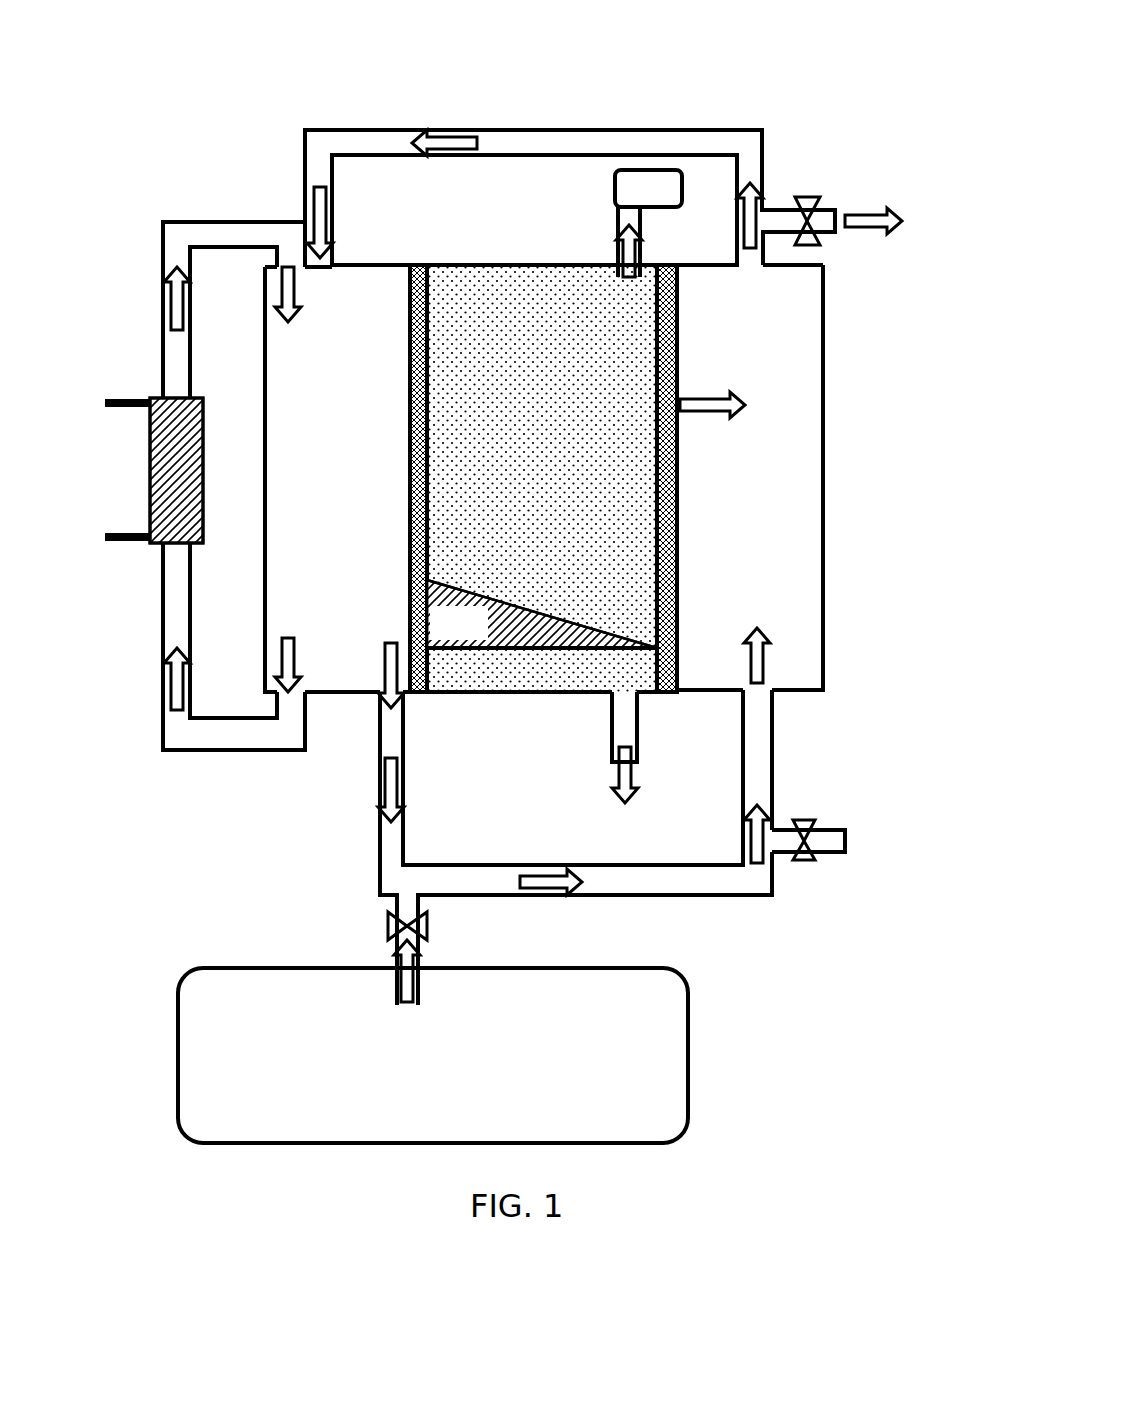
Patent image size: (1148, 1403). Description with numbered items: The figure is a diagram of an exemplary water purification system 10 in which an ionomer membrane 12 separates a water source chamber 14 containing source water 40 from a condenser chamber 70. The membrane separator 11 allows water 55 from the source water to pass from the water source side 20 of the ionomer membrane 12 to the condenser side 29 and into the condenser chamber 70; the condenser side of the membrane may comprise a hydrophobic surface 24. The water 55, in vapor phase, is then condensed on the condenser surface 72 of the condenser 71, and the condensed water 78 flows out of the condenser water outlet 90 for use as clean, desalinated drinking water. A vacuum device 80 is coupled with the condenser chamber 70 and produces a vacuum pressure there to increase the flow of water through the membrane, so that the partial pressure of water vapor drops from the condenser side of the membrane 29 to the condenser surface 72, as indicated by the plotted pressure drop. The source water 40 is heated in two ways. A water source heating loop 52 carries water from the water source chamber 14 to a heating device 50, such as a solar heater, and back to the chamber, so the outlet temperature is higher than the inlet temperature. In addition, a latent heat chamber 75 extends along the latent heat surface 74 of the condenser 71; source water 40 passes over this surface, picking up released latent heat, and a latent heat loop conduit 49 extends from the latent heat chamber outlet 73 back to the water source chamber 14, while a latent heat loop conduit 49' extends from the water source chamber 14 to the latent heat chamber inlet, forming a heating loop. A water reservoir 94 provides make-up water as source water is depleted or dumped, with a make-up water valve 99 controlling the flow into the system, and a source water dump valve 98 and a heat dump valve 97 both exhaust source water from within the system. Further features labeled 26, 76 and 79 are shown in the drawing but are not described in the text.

The water purification system 10 is at (287, 108).
The membrane separator 11 is at (488, 268).
The ionomer membrane 12 is at (414, 266).
The water source chamber 14 is at (352, 430).
The water source side 20 is at (408, 553).
The hydrophobic surface 24 is at (428, 292).
The membrane surface 26 is at (410, 310).
The condenser side 29 is at (430, 333).
The source water 40 is at (352, 488).
The latent heat loop conduit 49 is at (603, 211).
The latent heat loop conduit 49' is at (618, 794).
The heating device 50 is at (150, 398).
The water source heating loop 52 is at (176, 224).
The water 55 is at (502, 468).
The condenser chamber 70 is at (549, 423).
The condenser 71 is at (680, 568).
The condenser surface 72 is at (655, 490).
The latent heat chamber outlet 73 is at (742, 268).
The latent heat surface 74 is at (680, 489).
The latent heat chamber 75 is at (767, 542).
The heat flow 76 is at (745, 410).
The condensed water 78 is at (639, 680).
The coolant inlet 79 is at (772, 690).
The vacuum device 80 is at (616, 180).
The condenser water outlet 90 is at (613, 722).
The water reservoir 94 is at (262, 985).
The heat dump valve 97 is at (808, 198).
The source water dump valve 98 is at (806, 827).
The make-up water valve 99 is at (390, 912).